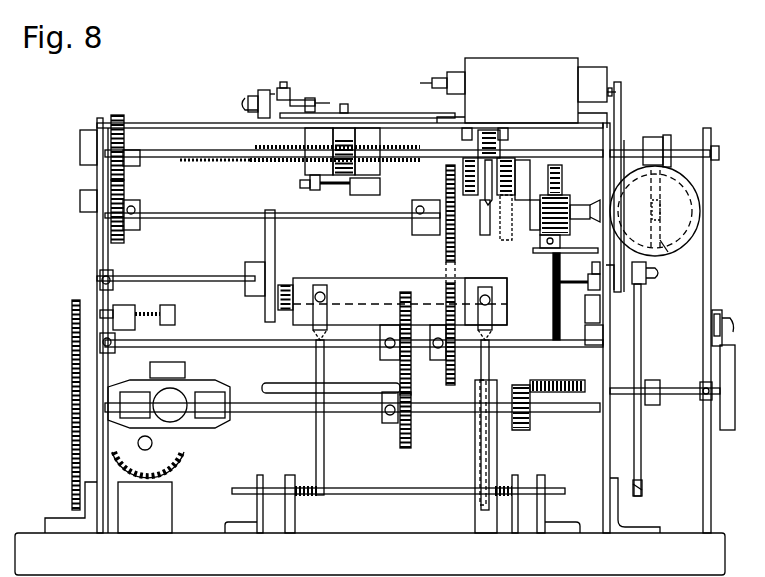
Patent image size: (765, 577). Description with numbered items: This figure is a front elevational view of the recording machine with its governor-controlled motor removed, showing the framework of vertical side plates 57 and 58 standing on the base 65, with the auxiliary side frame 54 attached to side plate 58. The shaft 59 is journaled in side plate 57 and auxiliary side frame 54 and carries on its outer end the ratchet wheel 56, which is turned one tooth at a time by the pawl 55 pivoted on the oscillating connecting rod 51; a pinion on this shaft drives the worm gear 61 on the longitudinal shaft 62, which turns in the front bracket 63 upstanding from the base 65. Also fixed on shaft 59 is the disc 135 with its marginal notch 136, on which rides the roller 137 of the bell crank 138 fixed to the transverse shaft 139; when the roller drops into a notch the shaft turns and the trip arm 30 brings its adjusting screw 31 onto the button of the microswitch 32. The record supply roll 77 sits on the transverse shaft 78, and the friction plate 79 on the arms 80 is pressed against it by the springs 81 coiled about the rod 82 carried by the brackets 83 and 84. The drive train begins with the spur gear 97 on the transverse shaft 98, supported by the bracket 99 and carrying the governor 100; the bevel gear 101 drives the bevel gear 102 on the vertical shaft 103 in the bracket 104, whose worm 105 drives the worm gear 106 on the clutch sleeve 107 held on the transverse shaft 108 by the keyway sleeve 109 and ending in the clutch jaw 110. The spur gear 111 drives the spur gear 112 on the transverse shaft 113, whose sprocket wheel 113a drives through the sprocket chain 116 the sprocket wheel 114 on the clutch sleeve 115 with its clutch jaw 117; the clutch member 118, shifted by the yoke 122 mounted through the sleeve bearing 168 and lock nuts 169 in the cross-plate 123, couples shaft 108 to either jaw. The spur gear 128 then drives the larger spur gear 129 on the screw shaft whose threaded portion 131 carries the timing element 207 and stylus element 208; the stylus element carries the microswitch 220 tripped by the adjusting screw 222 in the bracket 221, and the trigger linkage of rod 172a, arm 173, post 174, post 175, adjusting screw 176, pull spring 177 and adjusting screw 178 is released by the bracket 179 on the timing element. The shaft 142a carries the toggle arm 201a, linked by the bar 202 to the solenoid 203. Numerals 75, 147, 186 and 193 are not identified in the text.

The trip arm 30 is at (588, 288).
The adjusting screw 31 is at (592, 267).
The microswitch 32 is at (585, 308).
The connecting rod 51 is at (722, 312).
The auxiliary side frame 54 is at (708, 510).
The pawl 55 is at (733, 325).
The ratchet wheel 56 is at (730, 372).
The vertical side plate 57 is at (96, 250).
The vertical side plate 58 is at (603, 438).
The shaft 59 is at (290, 384).
The worm gear 61 is at (175, 462).
The longitudinal shaft 62 is at (148, 450).
The front bracket 63 is at (145, 507).
The base 65 is at (727, 557).
The disc 75 is at (268, 225).
The supply roll 77 is at (283, 312).
The transverse shaft 78 is at (203, 282).
The friction plate 79 is at (372, 278).
The arm 80 is at (492, 368).
The spring 81 is at (305, 484).
The transverse rod 82 is at (429, 484).
The bracket 83 is at (257, 514).
The bracket 84 is at (295, 523).
The spur gear 97 is at (72, 355).
The transverse shaft 98 is at (268, 412).
The bracket 99 is at (497, 446).
The governor 100 is at (185, 385).
The bevel gear 101 is at (526, 430).
The bevel gear 102 is at (560, 398).
The vertical shaft 103 is at (585, 330).
The bracket 104 is at (570, 248).
The worm 105 is at (582, 194).
The worm gear 106 is at (570, 172).
The clutch sleeve 107 is at (534, 178).
The transverse shaft 108 is at (198, 213).
The keyway sleeve 109 is at (508, 176).
The clutch jaw 110 is at (506, 240).
The spur gear 111 is at (398, 440).
The spur gear 112 is at (398, 362).
The transverse shaft 113 is at (205, 340).
The sprocket wheel 113a is at (460, 373).
The sprocket wheel 114 is at (445, 176).
The clutch sleeve 115 is at (430, 235).
The sprocket chain 116 is at (452, 278).
The clutch jaw 117 is at (466, 176).
The clutch member 118 is at (478, 235).
The yoke 122 is at (492, 170).
The cross-plate 123 is at (186, 120).
The spur gear 128 is at (125, 240).
The spur gear 129 is at (127, 165).
The externally threaded portion 131 is at (268, 166).
The disc 135 is at (642, 440).
The marginal notch 136 is at (642, 480).
The roller 137 is at (652, 276).
The bell crank 138 is at (623, 108).
The transverse shaft 139 is at (624, 294).
The shaft 142a is at (240, 153).
The motor shaft 147 is at (616, 88).
The sleeve bearing 168 is at (478, 144).
The lock nut 169 is at (508, 136).
The rod 172a is at (385, 113).
The arm 173 is at (320, 104).
The post 174 is at (290, 88).
The post 175 is at (262, 88).
The adjusting screw 176 is at (245, 102).
The pull spring 177 is at (272, 90).
The adjusting screw 178 is at (300, 100).
The bracket 179 is at (330, 100).
The stop 186 is at (348, 104).
The motor 193 is at (518, 60).
The toggle arm 201a is at (671, 140).
The bar 202 is at (678, 252).
The solenoid 203 is at (700, 222).
The timing element 207 is at (305, 175).
The stylus element 208 is at (380, 172).
The microswitch 220 is at (365, 195).
The bracket 221 is at (305, 190).
The adjusting screw 222 is at (330, 188).